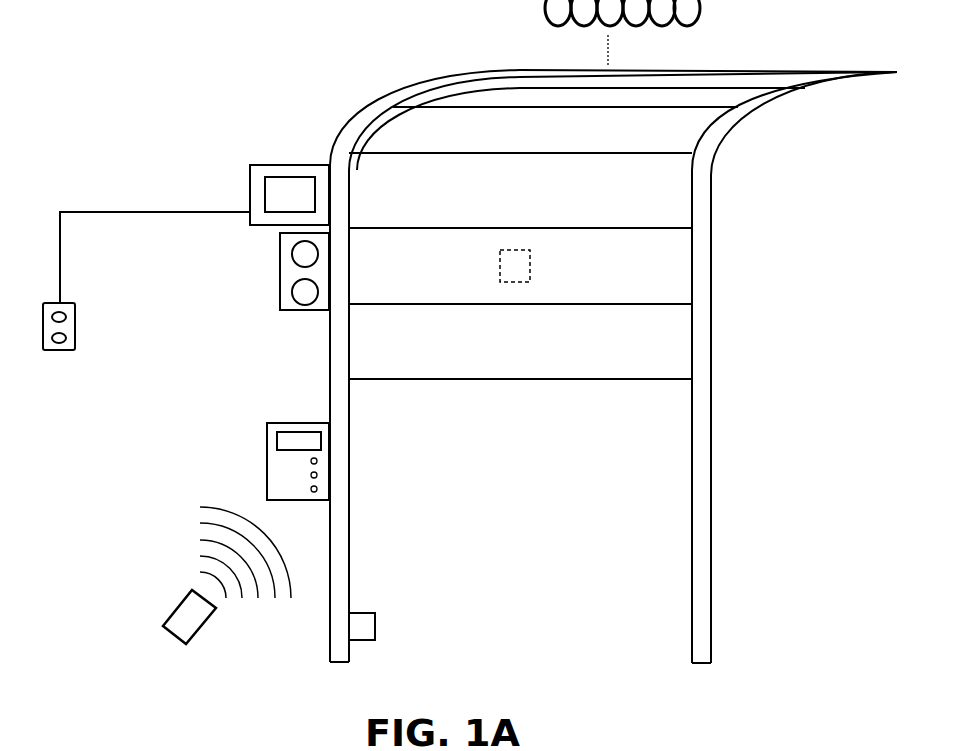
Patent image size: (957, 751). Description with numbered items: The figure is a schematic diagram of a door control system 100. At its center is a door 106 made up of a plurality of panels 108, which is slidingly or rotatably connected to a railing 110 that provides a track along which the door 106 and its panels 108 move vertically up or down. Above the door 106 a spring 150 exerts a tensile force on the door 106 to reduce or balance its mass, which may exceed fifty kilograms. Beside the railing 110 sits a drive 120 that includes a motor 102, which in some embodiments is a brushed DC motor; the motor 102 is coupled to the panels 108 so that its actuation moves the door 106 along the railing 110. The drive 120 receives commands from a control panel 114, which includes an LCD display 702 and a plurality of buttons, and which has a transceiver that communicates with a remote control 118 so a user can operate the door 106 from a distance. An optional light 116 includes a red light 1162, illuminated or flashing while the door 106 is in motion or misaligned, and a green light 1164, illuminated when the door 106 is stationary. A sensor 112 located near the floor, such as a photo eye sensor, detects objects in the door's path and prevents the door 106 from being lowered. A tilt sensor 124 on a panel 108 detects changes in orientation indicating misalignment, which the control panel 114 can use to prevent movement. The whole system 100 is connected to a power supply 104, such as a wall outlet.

The door control system 100 is at (139, 151).
The motor 102 is at (289, 192).
The power supply 104 is at (63, 368).
The door 106 is at (512, 395).
The panels 108 is at (675, 343).
The railing 110 is at (727, 555).
The sensor 112 is at (396, 630).
The control panel 114 is at (300, 420).
The light 116 is at (280, 272).
The red light 1162 is at (291, 254).
The green light 1164 is at (291, 292).
The remote control 118 is at (170, 614).
The drive 120 is at (250, 190).
The tilt sensor 124 is at (548, 270).
The spring 150 is at (700, 5).
The LCD display 702 is at (278, 443).